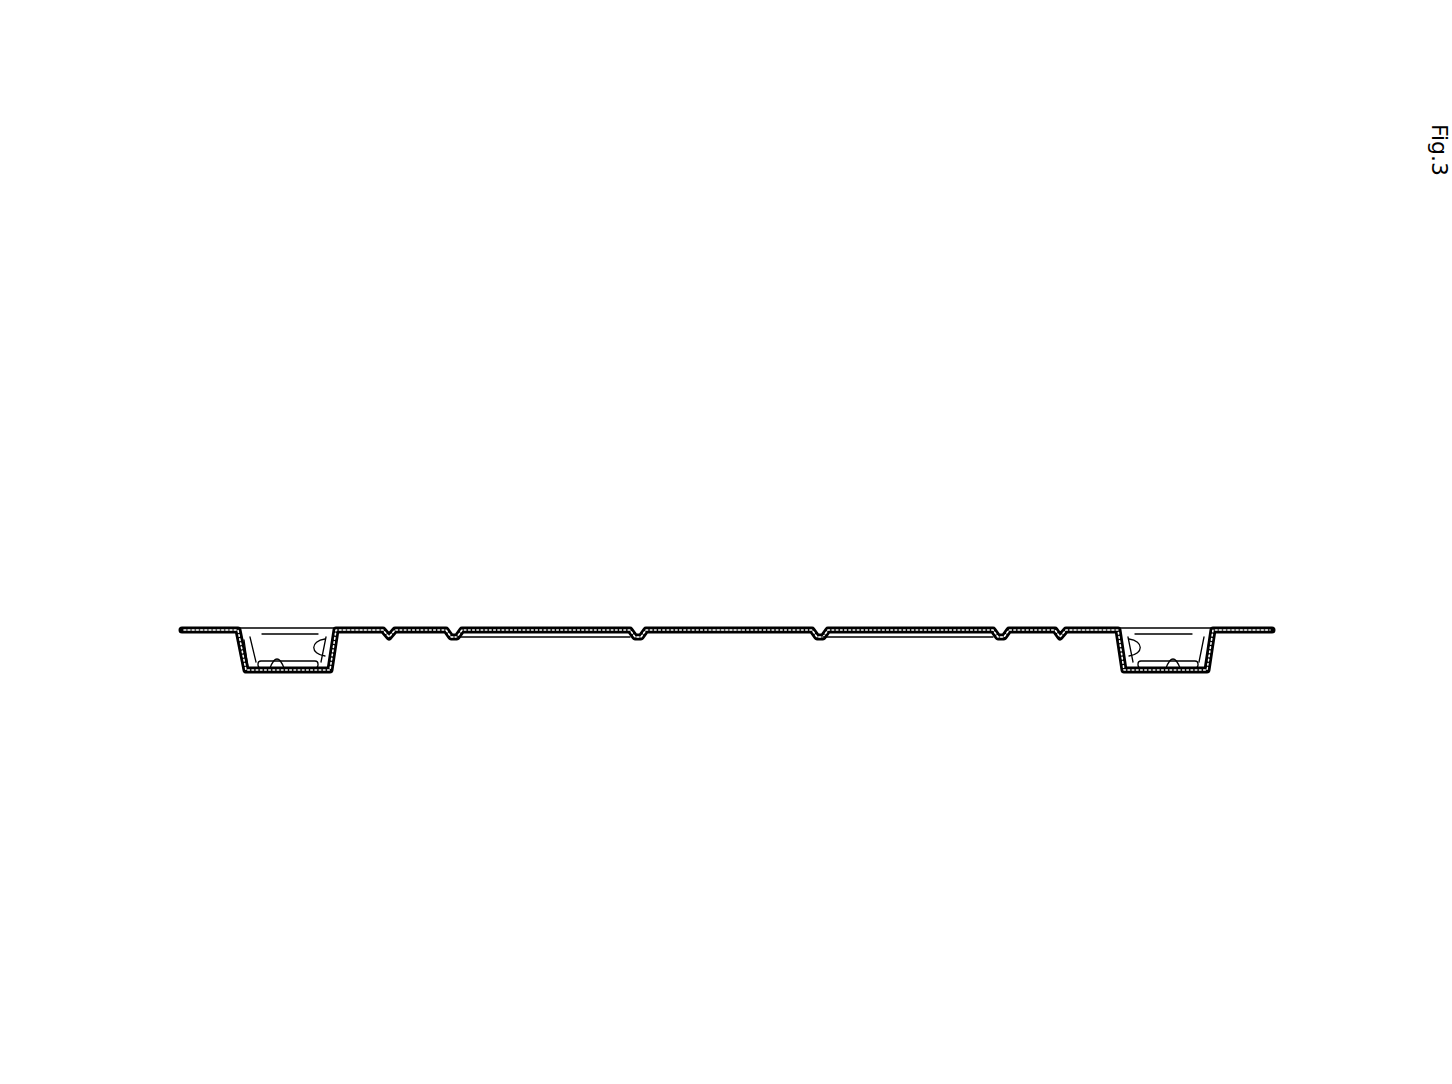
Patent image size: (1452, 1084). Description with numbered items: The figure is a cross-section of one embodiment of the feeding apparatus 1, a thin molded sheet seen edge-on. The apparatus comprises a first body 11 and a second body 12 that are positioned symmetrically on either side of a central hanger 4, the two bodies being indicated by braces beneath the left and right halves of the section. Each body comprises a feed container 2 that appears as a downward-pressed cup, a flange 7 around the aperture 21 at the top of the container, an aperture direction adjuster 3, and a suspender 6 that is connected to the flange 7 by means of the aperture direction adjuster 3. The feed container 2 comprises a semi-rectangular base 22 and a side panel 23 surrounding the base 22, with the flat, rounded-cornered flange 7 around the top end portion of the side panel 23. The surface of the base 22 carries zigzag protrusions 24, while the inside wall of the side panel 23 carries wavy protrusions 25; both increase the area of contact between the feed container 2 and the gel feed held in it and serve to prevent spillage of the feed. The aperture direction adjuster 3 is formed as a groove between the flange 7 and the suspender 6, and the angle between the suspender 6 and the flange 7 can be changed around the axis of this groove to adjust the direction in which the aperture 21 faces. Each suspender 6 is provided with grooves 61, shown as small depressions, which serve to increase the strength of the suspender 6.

The feeding apparatus 1 is at (912, 440).
The feed container 2 is at (267, 630).
The aperture direction adjuster 3 is at (388, 628).
The hanger 4 is at (742, 619).
The suspender 6 is at (405, 641).
The flange 7 is at (195, 628).
The first body 11 is at (712, 795).
The second body 12 is at (745, 790).
The aperture 21 is at (278, 630).
The base 22 is at (287, 670).
The side panel 23 is at (240, 652).
The zigzag protrusions 24 is at (265, 672).
The wavy protrusions 25 is at (335, 660).
The grooves 61 is at (448, 626).